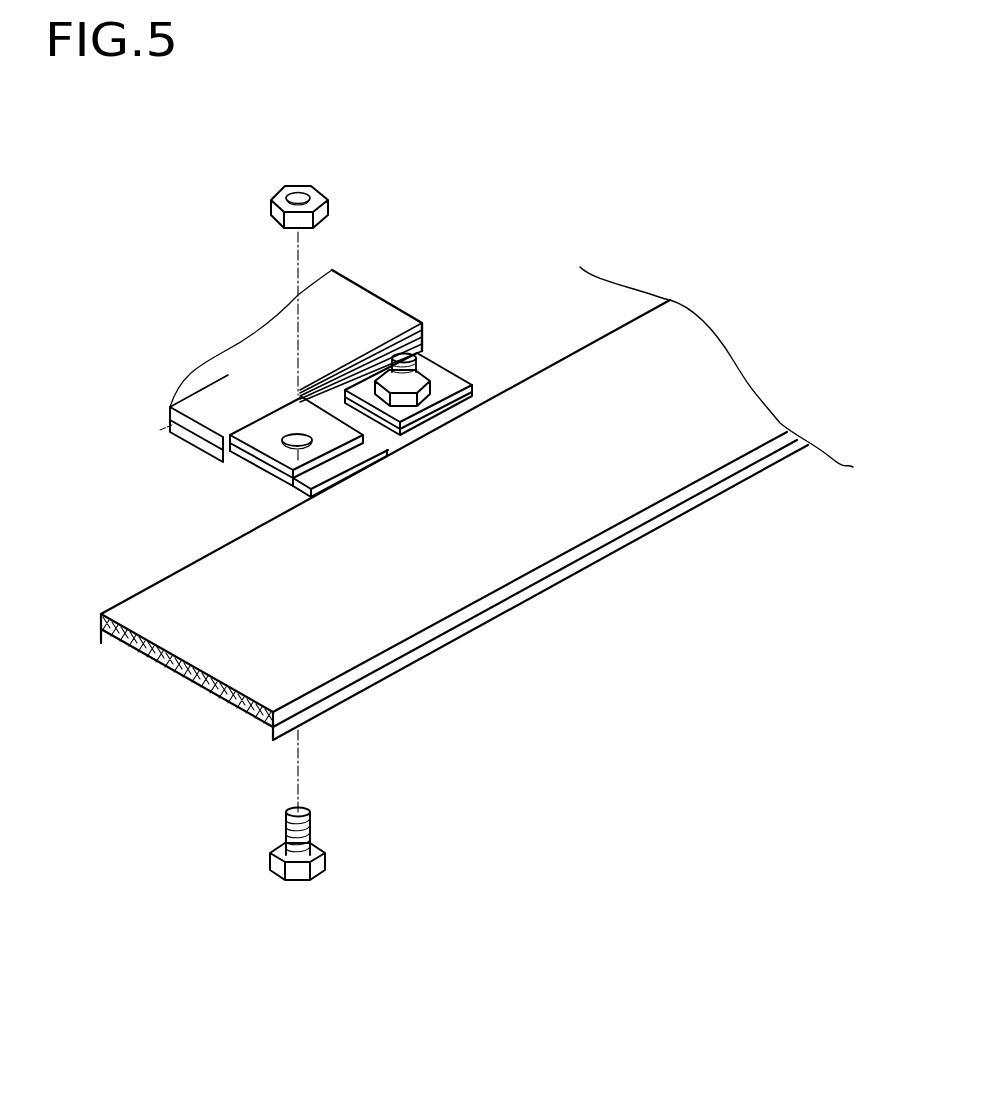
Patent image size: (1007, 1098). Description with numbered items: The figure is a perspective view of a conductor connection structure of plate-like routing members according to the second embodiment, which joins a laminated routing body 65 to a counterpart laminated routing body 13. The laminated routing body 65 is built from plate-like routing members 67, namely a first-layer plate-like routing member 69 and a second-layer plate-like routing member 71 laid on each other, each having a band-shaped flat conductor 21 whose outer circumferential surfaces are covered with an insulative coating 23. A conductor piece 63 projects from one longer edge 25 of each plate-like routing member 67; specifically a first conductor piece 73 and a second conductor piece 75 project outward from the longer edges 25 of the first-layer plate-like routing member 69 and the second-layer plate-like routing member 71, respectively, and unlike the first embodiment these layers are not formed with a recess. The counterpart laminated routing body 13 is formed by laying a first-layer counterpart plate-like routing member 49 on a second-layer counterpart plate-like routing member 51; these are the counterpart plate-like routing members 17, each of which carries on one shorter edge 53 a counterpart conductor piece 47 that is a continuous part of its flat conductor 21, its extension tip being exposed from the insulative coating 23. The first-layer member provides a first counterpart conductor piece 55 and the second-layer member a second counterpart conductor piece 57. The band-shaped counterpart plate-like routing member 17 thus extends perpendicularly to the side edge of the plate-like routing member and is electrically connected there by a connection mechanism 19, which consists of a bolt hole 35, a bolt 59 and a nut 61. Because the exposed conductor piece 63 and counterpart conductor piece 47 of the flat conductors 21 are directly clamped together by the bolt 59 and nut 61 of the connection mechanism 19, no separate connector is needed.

The counterpart laminated routing body 13 is at (285, 300).
The counterpart plate-like routing member 17 is at (137, 348).
The connection mechanism 19 is at (440, 365).
The flat conductor 21 is at (210, 708).
The insulative coating 23 is at (190, 614).
The longer edge 25 is at (600, 338).
The bolt hole 35 is at (282, 433).
The counterpart conductor piece 47 is at (411, 270).
The first-layer counterpart plate-like routing member 49 is at (168, 447).
The second-layer counterpart plate-like routing member 51 is at (170, 407).
The shorter edge 53 is at (266, 450).
The first counterpart conductor piece 55 is at (337, 367).
The second counterpart conductor piece 57 is at (313, 383).
The bolt 59 is at (300, 878).
The nut 61 is at (312, 177).
The conductor piece 63 is at (428, 475).
The laminated routing body 65 is at (475, 508).
The plate-like routing member 67 is at (454, 586).
The first-layer plate-like routing member 69 is at (648, 538).
The second-layer plate-like routing member 71 is at (690, 496).
The first conductor piece 73 is at (482, 392).
The second conductor piece 75 is at (327, 474).